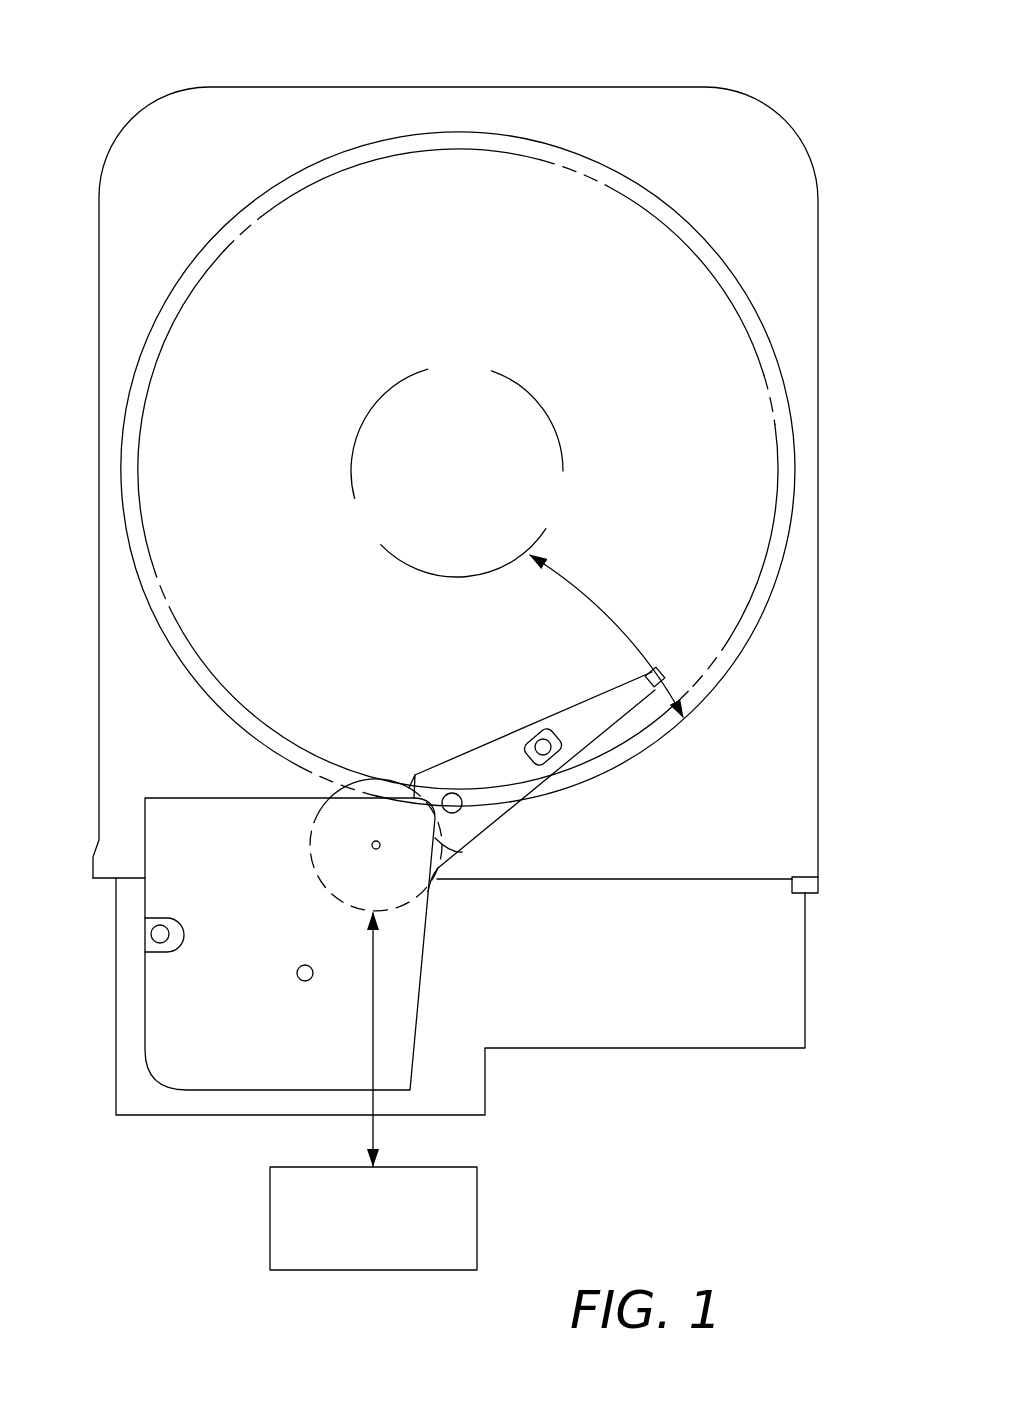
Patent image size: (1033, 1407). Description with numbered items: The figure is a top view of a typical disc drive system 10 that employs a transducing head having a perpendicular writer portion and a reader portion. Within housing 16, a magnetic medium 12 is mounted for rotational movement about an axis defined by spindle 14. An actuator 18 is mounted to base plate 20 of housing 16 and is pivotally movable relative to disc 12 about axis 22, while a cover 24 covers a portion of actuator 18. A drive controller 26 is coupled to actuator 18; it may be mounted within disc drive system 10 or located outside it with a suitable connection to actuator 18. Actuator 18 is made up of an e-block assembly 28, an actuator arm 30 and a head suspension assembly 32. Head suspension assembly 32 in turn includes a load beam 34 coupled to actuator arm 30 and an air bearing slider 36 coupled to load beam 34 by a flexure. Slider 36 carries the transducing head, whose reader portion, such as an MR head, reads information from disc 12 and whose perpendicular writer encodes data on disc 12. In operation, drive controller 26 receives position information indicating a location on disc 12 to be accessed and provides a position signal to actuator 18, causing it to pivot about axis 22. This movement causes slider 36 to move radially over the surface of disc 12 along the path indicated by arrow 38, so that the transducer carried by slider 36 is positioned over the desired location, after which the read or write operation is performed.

The disc drive system 10 is at (280, 63).
The magnetic medium 12 is at (471, 251).
The spindle 14 is at (476, 486).
The housing 16 is at (818, 262).
The actuator 18 is at (455, 909).
The base plate 20 is at (593, 1049).
The axis 22 is at (372, 845).
The cover 24 is at (180, 893).
The drive controller 26 is at (478, 1188).
The e-block assembly 28 is at (375, 772).
The actuator arm 30 is at (468, 823).
The head suspension assembly 32 is at (608, 688).
The load beam 34 is at (570, 714).
The air bearing slider 36 is at (661, 667).
The arrow 38 is at (575, 580).